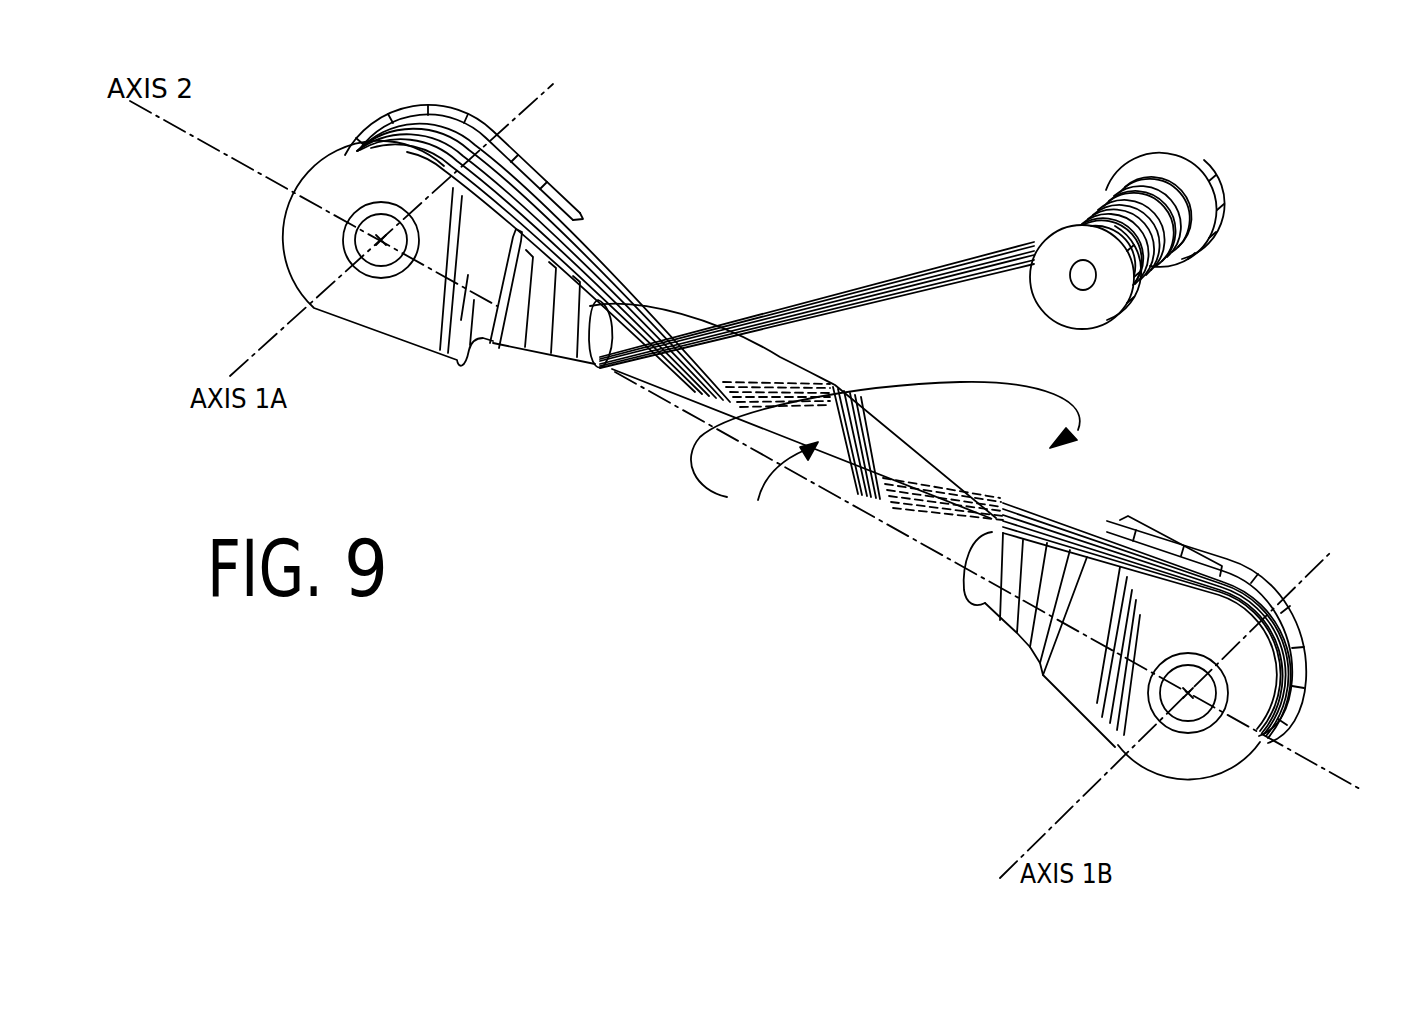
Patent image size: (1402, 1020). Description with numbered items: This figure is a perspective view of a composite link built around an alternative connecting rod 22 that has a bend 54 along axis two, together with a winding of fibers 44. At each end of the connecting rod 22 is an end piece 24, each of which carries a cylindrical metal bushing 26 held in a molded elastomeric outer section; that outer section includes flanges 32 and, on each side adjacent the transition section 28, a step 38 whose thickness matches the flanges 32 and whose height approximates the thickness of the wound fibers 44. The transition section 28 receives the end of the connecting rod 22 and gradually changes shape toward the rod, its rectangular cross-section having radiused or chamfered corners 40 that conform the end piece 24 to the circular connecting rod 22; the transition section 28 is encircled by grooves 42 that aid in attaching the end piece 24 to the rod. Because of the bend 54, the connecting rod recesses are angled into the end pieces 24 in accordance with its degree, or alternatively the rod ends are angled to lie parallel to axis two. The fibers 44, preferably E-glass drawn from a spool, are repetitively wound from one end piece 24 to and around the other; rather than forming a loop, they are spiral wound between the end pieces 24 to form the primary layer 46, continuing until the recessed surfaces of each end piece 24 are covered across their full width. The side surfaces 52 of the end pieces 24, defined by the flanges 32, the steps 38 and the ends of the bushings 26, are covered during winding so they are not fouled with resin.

The connecting rod 22 is at (937, 452).
The end piece 24 is at (453, 80).
The bushing 26 is at (380, 270).
The transition section 28 is at (510, 352).
The flanges 32 is at (497, 208).
The step 38 is at (477, 347).
The radiused or chamfered corners 40 is at (601, 368).
The grooves 42 is at (562, 355).
The fibers 44 is at (926, 262).
The primary layer 46 is at (1098, 523).
The side surfaces 52 is at (417, 332).
The bend 54 is at (779, 487).